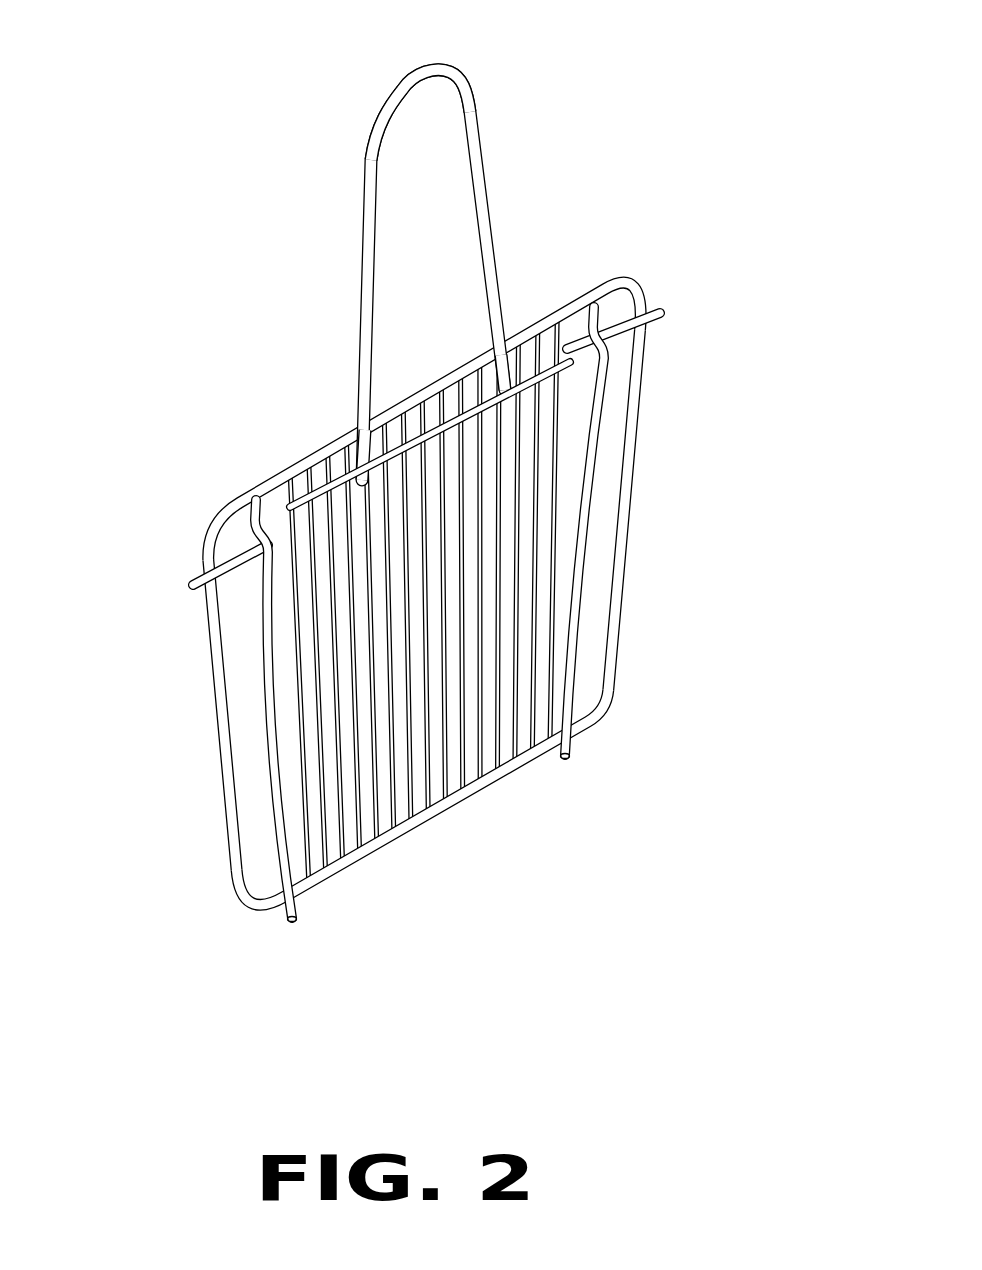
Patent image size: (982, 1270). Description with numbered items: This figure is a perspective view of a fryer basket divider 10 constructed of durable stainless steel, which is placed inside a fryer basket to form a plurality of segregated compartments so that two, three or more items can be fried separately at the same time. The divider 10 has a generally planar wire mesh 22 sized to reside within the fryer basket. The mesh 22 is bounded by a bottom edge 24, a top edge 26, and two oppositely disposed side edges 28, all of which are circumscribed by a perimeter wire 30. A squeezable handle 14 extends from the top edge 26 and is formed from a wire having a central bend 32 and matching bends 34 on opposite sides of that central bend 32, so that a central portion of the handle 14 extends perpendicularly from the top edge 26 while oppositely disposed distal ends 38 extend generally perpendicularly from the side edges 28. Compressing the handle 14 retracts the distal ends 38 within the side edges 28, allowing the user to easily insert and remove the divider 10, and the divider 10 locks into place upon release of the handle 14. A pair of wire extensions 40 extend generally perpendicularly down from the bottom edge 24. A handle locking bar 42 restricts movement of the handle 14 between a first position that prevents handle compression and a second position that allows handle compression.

The cooking grate assembly 10 is at (444, 477).
The handle 14 is at (449, 250).
The grid wires 22 is at (405, 500).
The bottom frame rail 24 is at (415, 822).
The top frame rail 26 is at (288, 478).
The side frame rails 28 is at (627, 582).
The support legs 30 is at (590, 470).
The handle grip 32 is at (421, 73).
The cross bar 34 is at (533, 380).
The pivot pins 38 is at (640, 337).
The leg feet 40 is at (567, 750).
The handle leg ends 42 is at (513, 383).